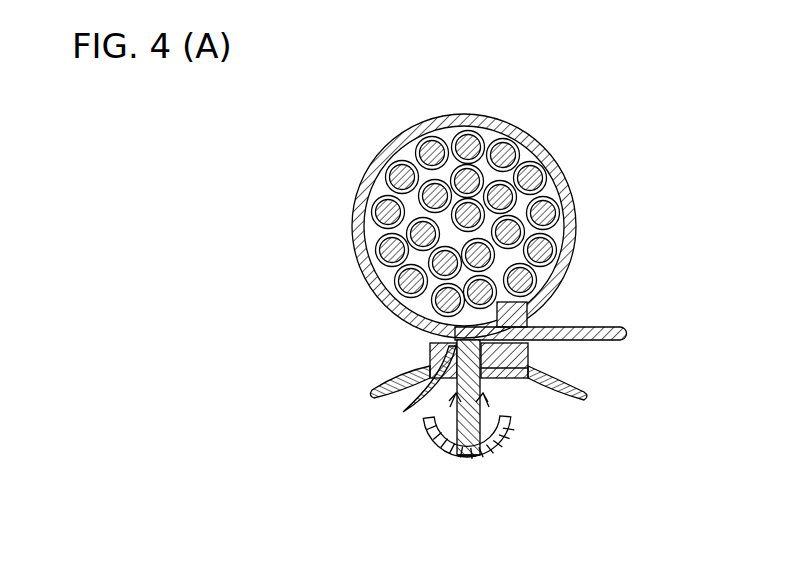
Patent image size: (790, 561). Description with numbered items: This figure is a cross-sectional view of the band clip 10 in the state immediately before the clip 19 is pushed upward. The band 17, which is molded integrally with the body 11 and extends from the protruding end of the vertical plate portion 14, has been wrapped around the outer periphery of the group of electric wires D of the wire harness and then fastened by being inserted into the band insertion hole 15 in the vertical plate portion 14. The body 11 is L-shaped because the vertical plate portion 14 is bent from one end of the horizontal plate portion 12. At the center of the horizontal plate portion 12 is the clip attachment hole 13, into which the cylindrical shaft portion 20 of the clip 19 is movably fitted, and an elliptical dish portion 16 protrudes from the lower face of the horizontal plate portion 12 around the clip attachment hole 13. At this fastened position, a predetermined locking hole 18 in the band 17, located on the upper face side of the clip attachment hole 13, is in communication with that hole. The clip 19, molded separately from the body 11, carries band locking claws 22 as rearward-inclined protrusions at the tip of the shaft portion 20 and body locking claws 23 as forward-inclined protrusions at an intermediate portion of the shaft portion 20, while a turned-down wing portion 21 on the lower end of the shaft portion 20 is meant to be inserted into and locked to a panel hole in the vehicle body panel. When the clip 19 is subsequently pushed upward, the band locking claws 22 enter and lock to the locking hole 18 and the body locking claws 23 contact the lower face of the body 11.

The band clip 10 is at (471, 213).
The group of electric wires D is at (540, 149).
The band 17 is at (576, 203).
The body 11 is at (369, 336).
The vertical plate portion 14 is at (460, 293).
The horizontal plate portion 12 is at (430, 347).
The band insertion hole 15 is at (528, 315).
The locking hole 18 is at (528, 352).
The elliptical dish portion 16 is at (588, 395).
The clip attachment hole 13 is at (483, 349).
The band locking claw 22 is at (407, 411).
The body locking claw 23 is at (497, 414).
The turned-down wing portion 21 is at (501, 438).
The shaft portion 20 is at (472, 452).
The clip 19 is at (457, 460).